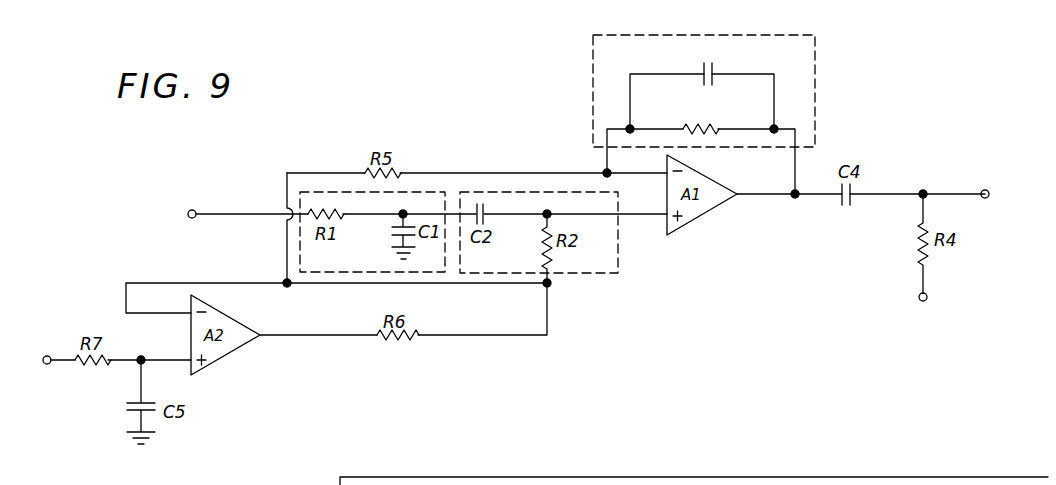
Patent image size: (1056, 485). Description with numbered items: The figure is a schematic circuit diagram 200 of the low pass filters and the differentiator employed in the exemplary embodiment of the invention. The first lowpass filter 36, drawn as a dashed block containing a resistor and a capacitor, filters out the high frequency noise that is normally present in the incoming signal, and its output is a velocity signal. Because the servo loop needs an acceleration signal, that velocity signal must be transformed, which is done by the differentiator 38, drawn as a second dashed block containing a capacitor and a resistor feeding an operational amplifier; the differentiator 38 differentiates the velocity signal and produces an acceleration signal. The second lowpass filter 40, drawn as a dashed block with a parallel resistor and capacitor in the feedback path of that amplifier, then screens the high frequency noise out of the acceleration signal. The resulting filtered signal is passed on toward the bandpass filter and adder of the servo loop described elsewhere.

The lowpass filter 36 is at (443, 191).
The differentiator 38 is at (618, 263).
The lowpass filter 40 is at (815, 78).
The schematic circuit diagram 200 is at (935, 90).